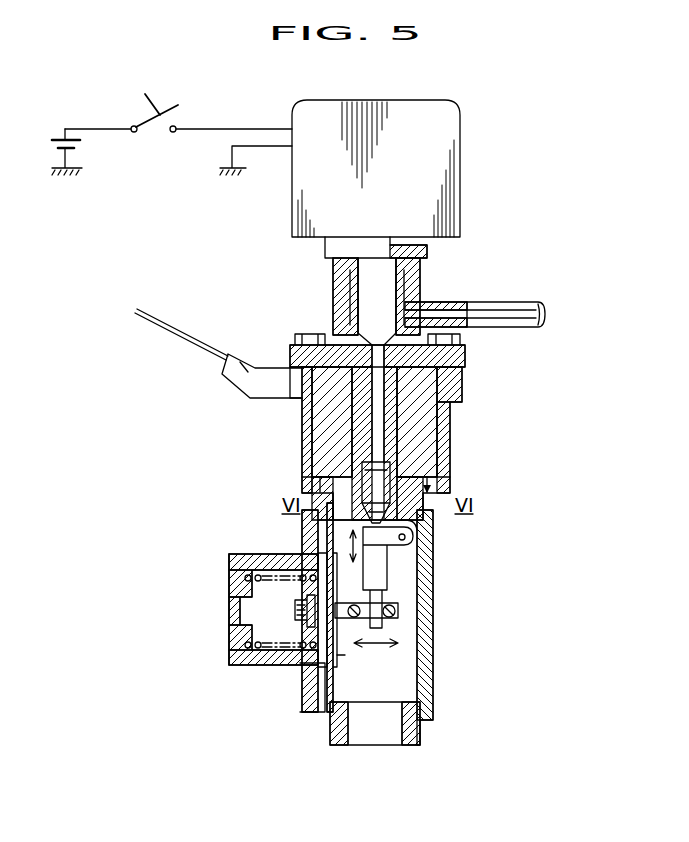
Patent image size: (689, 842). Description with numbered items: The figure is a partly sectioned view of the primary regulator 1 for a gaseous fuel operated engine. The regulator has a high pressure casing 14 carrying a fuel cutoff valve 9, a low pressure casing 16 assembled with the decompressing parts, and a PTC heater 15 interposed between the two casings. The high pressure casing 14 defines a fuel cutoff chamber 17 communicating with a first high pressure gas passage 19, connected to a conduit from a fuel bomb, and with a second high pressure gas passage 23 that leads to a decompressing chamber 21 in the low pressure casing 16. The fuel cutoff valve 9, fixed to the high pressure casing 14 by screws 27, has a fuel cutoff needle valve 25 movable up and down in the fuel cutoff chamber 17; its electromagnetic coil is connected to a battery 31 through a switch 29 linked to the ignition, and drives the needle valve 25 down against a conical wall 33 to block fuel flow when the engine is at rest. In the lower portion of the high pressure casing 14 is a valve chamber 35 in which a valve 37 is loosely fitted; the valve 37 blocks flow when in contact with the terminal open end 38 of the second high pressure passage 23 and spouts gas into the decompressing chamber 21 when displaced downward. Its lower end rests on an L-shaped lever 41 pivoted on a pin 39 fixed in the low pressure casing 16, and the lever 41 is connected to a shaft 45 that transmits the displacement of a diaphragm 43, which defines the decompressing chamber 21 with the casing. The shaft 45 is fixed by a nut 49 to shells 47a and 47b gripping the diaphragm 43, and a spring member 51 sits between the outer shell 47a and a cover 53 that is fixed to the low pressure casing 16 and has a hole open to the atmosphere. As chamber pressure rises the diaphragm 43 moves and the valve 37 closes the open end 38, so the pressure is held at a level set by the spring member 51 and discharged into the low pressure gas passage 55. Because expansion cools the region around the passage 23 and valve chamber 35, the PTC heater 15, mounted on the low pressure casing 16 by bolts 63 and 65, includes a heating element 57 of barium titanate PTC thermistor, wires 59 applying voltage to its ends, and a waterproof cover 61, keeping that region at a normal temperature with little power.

The primary regulator 1 is at (449, 727).
The fuel cutoff valve 9 is at (462, 120).
The high pressure casing 14 is at (540, 300).
The PTC heater 15 is at (137, 367).
The low pressure casing 16 is at (458, 382).
The fuel cutoff chamber 17 is at (420, 305).
The first high pressure gas passage 19 is at (546, 312).
The decompressing chamber 21 is at (410, 578).
The second high pressure gas passage 23 is at (400, 408).
The fuel cutoff needle valve 25 is at (385, 276).
The screws 27 is at (345, 283).
The switch 29 is at (165, 103).
The battery 31 is at (82, 148).
The conical wall 33 is at (352, 343).
The valve chamber 35 is at (392, 466).
The valve 37 is at (433, 514).
The terminal open end 38 is at (322, 422).
The pin 39 is at (413, 540).
The L-shaped lever 41 is at (400, 596).
The diaphragm 43 is at (333, 710).
The shaft 45 is at (347, 598).
The outer shell 47a is at (300, 672).
The shell 47b is at (337, 655).
The nut 49 is at (307, 618).
The spring member 51 is at (243, 645).
The cover 53 is at (228, 582).
The low pressure gas passage 55 is at (378, 730).
The heating element 57 is at (305, 425).
The wires 59 is at (207, 362).
The waterproof cover 61 is at (240, 392).
The bolt 63 is at (296, 338).
The bolt 65 is at (461, 342).